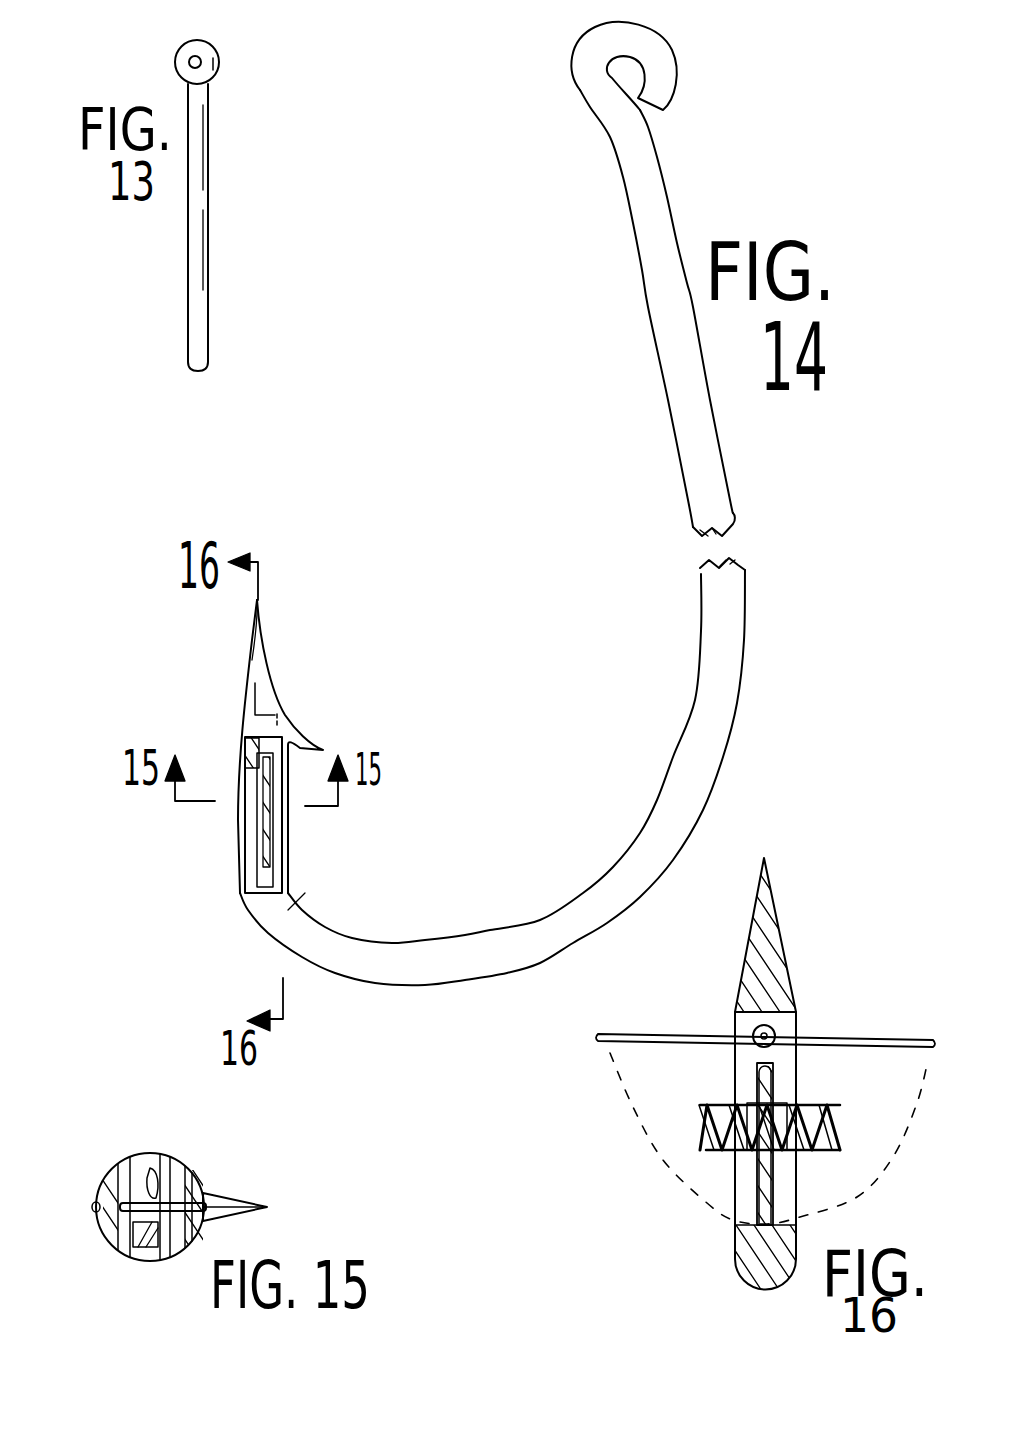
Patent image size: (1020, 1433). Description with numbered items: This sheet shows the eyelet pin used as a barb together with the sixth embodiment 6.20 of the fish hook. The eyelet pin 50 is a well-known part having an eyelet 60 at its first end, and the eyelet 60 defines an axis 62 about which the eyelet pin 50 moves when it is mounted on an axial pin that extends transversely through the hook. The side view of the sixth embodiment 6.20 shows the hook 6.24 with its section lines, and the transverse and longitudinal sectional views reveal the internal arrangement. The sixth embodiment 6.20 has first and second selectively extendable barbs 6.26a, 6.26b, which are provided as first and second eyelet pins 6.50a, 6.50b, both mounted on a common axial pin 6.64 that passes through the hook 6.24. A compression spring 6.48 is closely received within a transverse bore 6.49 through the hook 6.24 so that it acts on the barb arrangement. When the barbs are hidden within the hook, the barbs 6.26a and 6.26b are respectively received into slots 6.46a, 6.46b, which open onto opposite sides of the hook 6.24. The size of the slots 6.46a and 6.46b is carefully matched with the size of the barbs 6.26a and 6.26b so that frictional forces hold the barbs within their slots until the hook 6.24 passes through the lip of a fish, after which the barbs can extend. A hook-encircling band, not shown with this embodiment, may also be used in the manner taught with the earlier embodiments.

In FIG. 13, the eyelet pin 50 is at (210, 194).
In FIG. 13, the eyelet 60 is at (220, 67).
In FIG. 13, the axis 62 is at (198, 56).
In FIG. 14, the sixth embodiment 6.20 is at (402, 596).
In FIG. 15, the sixth embodiment 6.20 is at (256, 1155).
In FIG. 16, the sixth embodiment 6.20 is at (622, 1230).
In FIG. 14, the hook 6.24 is at (302, 898).
In FIG. 15, the hook 6.24 is at (205, 1240).
In FIG. 16, the first selectively extendable barb 6.26a is at (894, 1036).
In FIG. 14, the second selectively extendable barb 6.26b is at (273, 845).
In FIG. 16, the second selectively extendable barb 6.26b is at (664, 1035).
In FIG. 15, the first slot 6.46a is at (140, 1255).
In FIG. 15, the second slot 6.46b is at (157, 1165).
In FIG. 15, the compression spring 6.48 is at (163, 1258).
In FIG. 16, the compression spring 6.48 is at (817, 1107).
In FIG. 15, the transverse bore 6.49 is at (140, 1155).
In FIG. 16, the transverse bore 6.49 is at (723, 1147).
In FIG. 16, the first eyelet pin 6.50a is at (878, 1034).
In FIG. 16, the second eyelet pin 6.50b is at (664, 1049).
In FIG. 14, the axial pin 6.64 is at (238, 755).
In FIG. 16, the axial pin 6.64 is at (776, 1035).